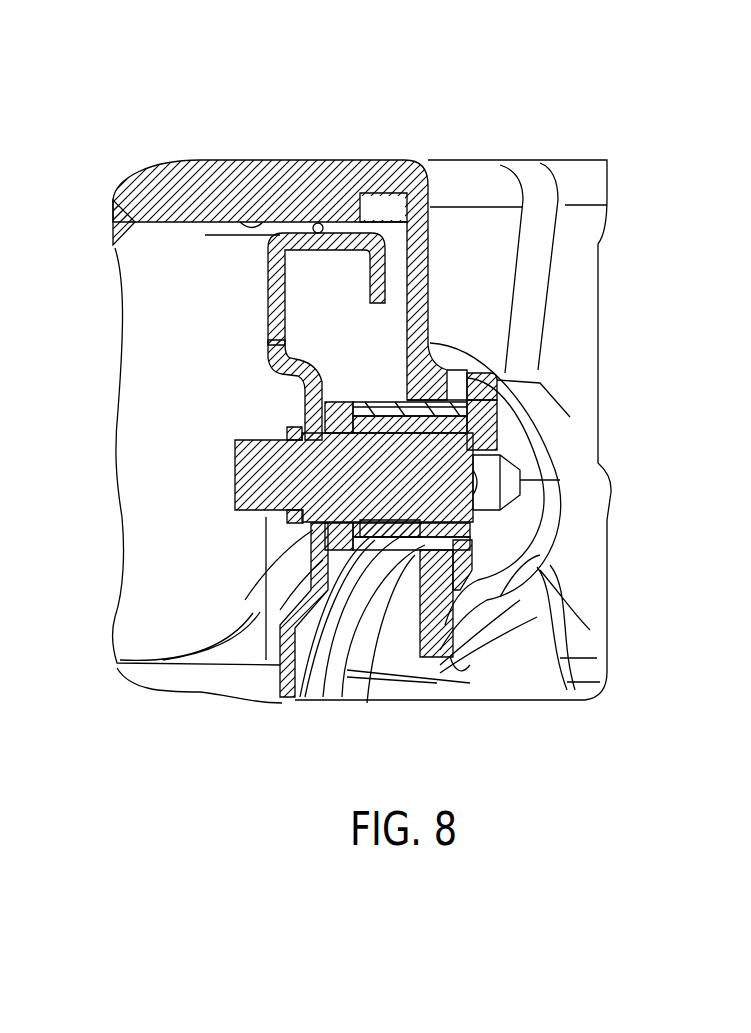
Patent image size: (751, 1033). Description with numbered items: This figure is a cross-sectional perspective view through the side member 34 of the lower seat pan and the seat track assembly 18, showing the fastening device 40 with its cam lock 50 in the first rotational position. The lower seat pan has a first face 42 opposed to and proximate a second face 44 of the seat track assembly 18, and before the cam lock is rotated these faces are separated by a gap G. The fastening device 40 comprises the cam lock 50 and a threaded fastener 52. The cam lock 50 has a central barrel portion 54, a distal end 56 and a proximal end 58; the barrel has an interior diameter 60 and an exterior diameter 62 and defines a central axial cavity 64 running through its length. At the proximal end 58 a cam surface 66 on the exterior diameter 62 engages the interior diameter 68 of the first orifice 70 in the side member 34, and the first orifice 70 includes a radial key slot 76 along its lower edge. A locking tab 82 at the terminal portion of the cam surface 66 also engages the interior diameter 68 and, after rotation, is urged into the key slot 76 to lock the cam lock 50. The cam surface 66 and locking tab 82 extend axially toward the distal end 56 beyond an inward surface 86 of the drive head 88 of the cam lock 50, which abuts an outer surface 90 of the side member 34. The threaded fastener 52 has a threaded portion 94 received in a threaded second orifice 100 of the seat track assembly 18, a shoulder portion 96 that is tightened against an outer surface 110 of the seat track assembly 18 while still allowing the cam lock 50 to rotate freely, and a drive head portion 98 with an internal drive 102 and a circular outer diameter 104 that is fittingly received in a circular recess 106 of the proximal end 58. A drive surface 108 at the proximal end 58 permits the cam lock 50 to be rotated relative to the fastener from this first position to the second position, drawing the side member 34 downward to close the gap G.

The gap G is at (222, 180).
The seat track assembly 18 is at (300, 378).
The side member 34 is at (410, 183).
The fastening device 40 is at (478, 360).
The first face 42 is at (287, 193).
The second face 44 is at (320, 235).
The cam lock 50 is at (480, 600).
The threaded fastener 52 is at (472, 443).
The central barrel portion 54 is at (403, 545).
The distal end 56 is at (262, 608).
The proximal end 58 is at (493, 375).
The interior diameter 60 is at (318, 655).
The exterior diameter 62 is at (388, 400).
The central axial cavity 64 is at (505, 500).
The cam surface 66 is at (497, 397).
The interior diameter 68 is at (398, 532).
The first orifice 70 is at (418, 600).
The radial key slot 76 is at (440, 553).
The locking tab 82 is at (489, 354).
The inward surface 86 is at (470, 533).
The drive head 88 is at (560, 693).
The outer surface 90 is at (386, 408).
The threaded portion 94 is at (253, 491).
The shoulder portion 96 is at (290, 447).
The drive head portion 98 is at (517, 440).
The threaded second orifice 100 is at (267, 517).
The internal drive 102 is at (510, 482).
The circular outer diameter 104 is at (493, 543).
The circular recess 106 is at (540, 387).
The drive surface 108 is at (500, 597).
The outer surface 110 is at (287, 665).